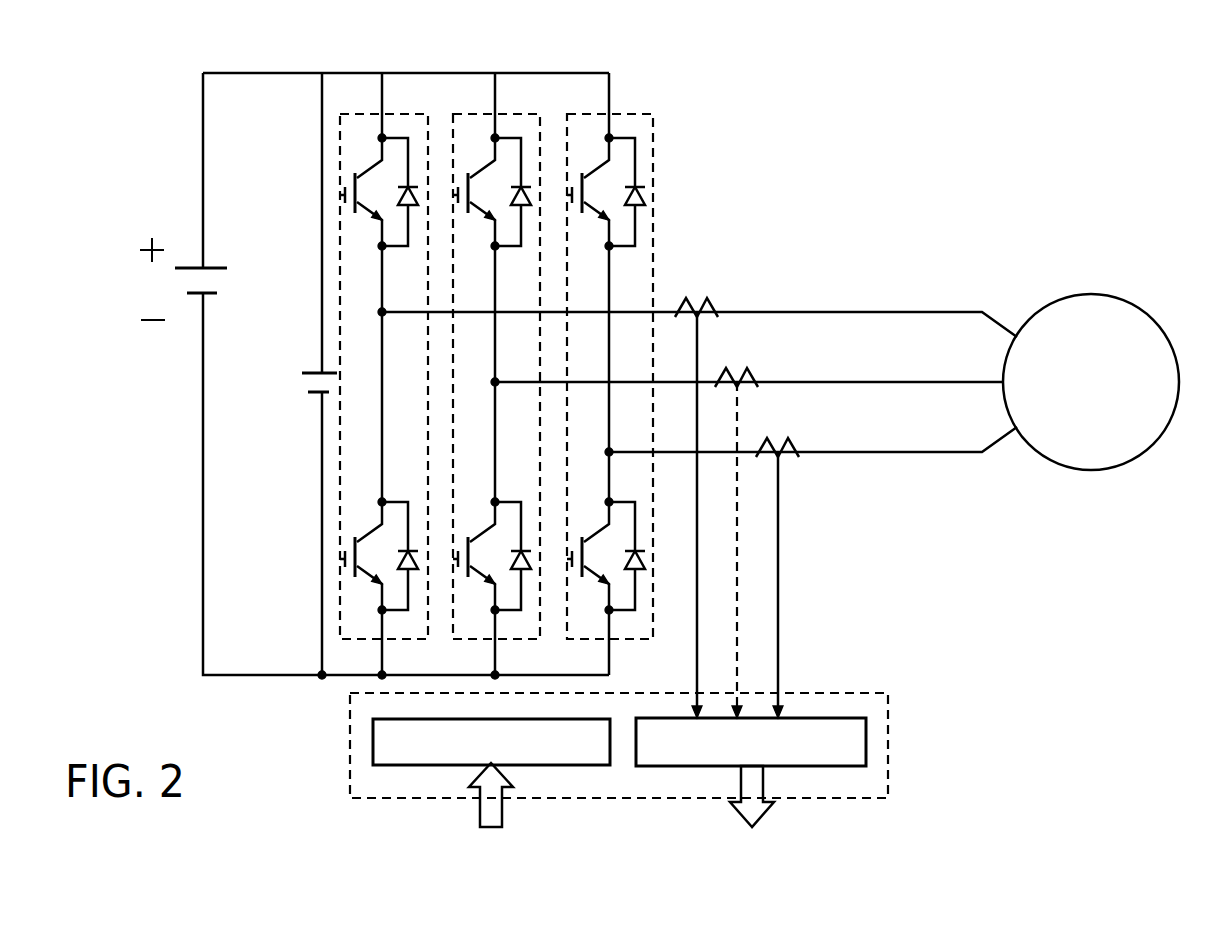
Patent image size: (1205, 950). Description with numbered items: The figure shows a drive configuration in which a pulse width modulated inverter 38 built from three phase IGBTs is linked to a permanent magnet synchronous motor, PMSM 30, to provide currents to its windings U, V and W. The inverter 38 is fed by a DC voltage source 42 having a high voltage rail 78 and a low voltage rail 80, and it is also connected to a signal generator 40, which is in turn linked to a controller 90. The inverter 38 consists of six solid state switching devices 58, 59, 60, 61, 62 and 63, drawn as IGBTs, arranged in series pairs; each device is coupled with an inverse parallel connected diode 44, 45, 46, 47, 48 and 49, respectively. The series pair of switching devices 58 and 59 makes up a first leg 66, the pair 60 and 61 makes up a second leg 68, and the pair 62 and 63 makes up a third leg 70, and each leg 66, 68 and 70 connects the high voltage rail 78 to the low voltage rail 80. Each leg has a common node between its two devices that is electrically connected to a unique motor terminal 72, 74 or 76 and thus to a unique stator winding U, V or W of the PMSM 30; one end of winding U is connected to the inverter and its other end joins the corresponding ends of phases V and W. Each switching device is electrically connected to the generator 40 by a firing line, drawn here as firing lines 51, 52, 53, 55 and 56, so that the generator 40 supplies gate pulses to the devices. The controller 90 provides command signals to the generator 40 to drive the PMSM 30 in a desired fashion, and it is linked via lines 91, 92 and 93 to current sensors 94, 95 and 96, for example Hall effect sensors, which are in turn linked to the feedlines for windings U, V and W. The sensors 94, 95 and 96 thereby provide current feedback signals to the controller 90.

The PMSM 30 is at (1137, 303).
The pulse width modulated inverter 38 is at (642, 55).
The signal generator 40 is at (372, 742).
The DC voltage source 42 is at (198, 282).
The inverse parallel connected diode 44 is at (415, 222).
The inverse parallel connected diode 45 is at (411, 548).
The inverse parallel connected diode 46 is at (529, 222).
The inverse parallel connected diode 47 is at (526, 548).
The inverse parallel connected diode 48 is at (646, 190).
The inverse parallel connected diode 49 is at (637, 548).
The firing line 51 is at (342, 197).
The firing line 52 is at (345, 566).
The firing line 53 is at (453, 202).
The firing line 55 is at (567, 202).
The firing line 56 is at (574, 572).
The solid state switching device 58 is at (347, 180).
The solid state switching device 59 is at (358, 545).
The solid state switching device 60 is at (447, 178).
The solid state switching device 61 is at (460, 540).
The solid state switching device 62 is at (567, 180).
The solid state switching device 63 is at (573, 540).
The leg 66 is at (366, 127).
The leg 68 is at (512, 127).
The leg 70 is at (637, 127).
The motor terminal 72 is at (1003, 328).
The motor terminal 74 is at (921, 382).
The motor terminal 76 is at (1005, 440).
The high voltage rail 78 is at (206, 70).
The low voltage rail 80 is at (210, 678).
The controller 90 is at (871, 711).
The line 91 is at (699, 598).
The line 92 is at (739, 612).
The line 93 is at (781, 671).
The current sensor 94 is at (701, 306).
The current sensor 95 is at (742, 376).
The current sensor 96 is at (784, 446).